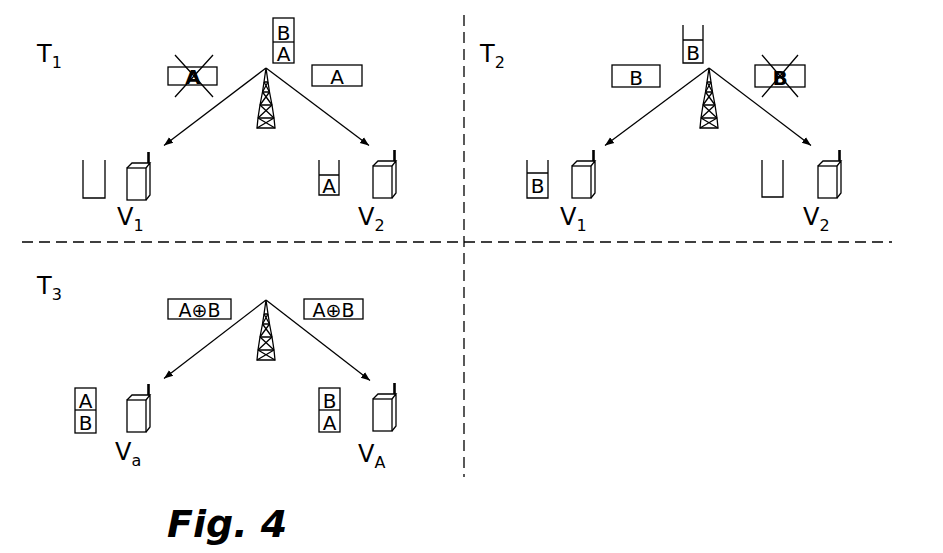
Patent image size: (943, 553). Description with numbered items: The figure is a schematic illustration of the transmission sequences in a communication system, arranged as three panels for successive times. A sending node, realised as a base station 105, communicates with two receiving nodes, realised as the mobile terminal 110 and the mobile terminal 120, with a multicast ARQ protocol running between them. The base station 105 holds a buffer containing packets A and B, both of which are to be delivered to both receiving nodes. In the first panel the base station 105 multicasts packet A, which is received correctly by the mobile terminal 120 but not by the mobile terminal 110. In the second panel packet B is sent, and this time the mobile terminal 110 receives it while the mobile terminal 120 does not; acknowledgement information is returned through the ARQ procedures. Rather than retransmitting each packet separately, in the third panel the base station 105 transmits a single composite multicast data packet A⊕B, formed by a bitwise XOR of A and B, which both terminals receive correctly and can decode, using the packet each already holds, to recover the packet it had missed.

The base station 105 is at (261, 131).
The mobile terminal 110 is at (133, 163).
The mobile terminal 120 is at (383, 161).